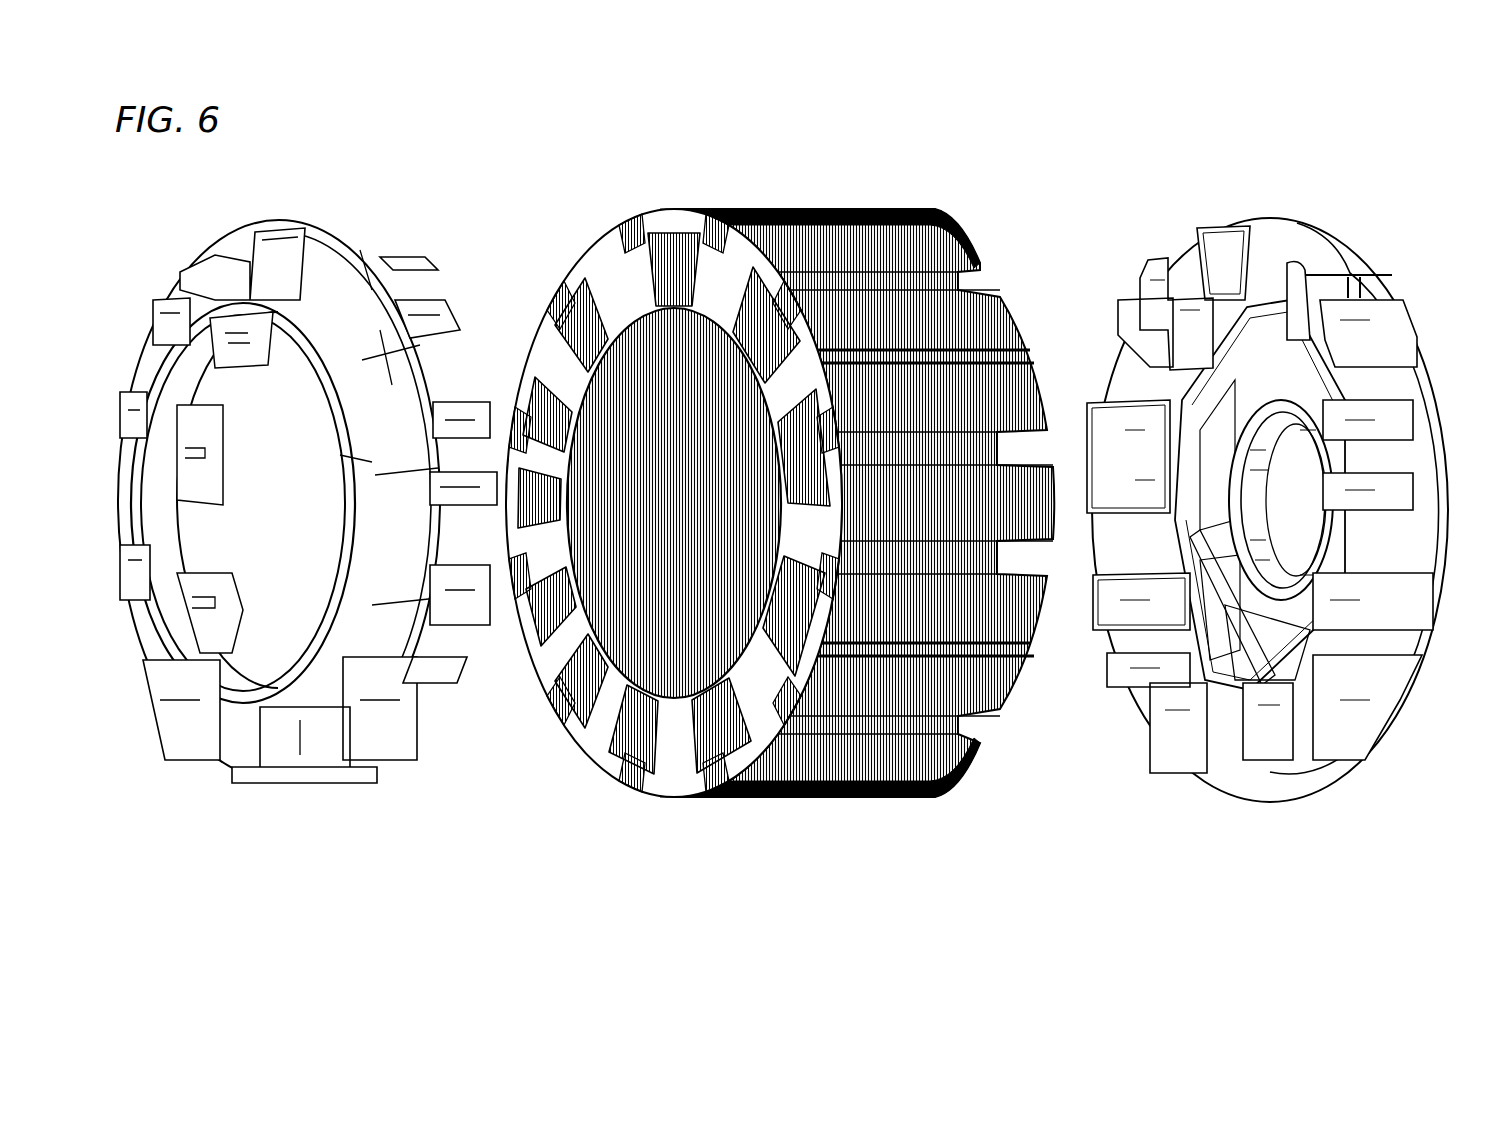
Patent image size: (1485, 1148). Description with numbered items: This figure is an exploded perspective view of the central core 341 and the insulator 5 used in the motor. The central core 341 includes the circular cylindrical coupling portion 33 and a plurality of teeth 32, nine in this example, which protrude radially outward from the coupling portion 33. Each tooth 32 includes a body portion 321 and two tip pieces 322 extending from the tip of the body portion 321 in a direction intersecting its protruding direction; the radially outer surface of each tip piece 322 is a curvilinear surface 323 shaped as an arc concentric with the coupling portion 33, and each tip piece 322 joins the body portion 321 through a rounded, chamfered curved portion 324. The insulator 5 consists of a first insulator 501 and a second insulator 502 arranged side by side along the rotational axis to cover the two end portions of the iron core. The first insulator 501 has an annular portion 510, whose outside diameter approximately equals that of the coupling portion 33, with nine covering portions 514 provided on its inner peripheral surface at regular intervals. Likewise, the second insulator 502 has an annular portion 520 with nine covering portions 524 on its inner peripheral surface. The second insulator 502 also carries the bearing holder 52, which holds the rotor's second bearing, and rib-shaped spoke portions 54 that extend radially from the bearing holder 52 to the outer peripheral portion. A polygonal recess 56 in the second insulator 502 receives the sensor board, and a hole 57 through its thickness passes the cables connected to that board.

The insulator 5 is at (667, 858).
The first insulator 501 is at (351, 540).
The second insulator 502 is at (1046, 534).
The annular portion 510 is at (175, 632).
The covering portions 514 is at (402, 268).
The annular portion 520 is at (1395, 555).
The covering portions 524 is at (1177, 267).
The bearing holder 52 is at (1307, 487).
The spoke portions 54 is at (1260, 378).
The recess 56 is at (1225, 657).
The hole 57 is at (1267, 640).
The teeth 32 is at (771, 446).
The body portion 321 is at (620, 257).
The tip pieces 322 is at (582, 263).
The curvilinear surface 323 is at (976, 738).
The curved portion 324 is at (598, 755).
The coupling portion 33 is at (583, 295).
The central core 341 is at (700, 143).